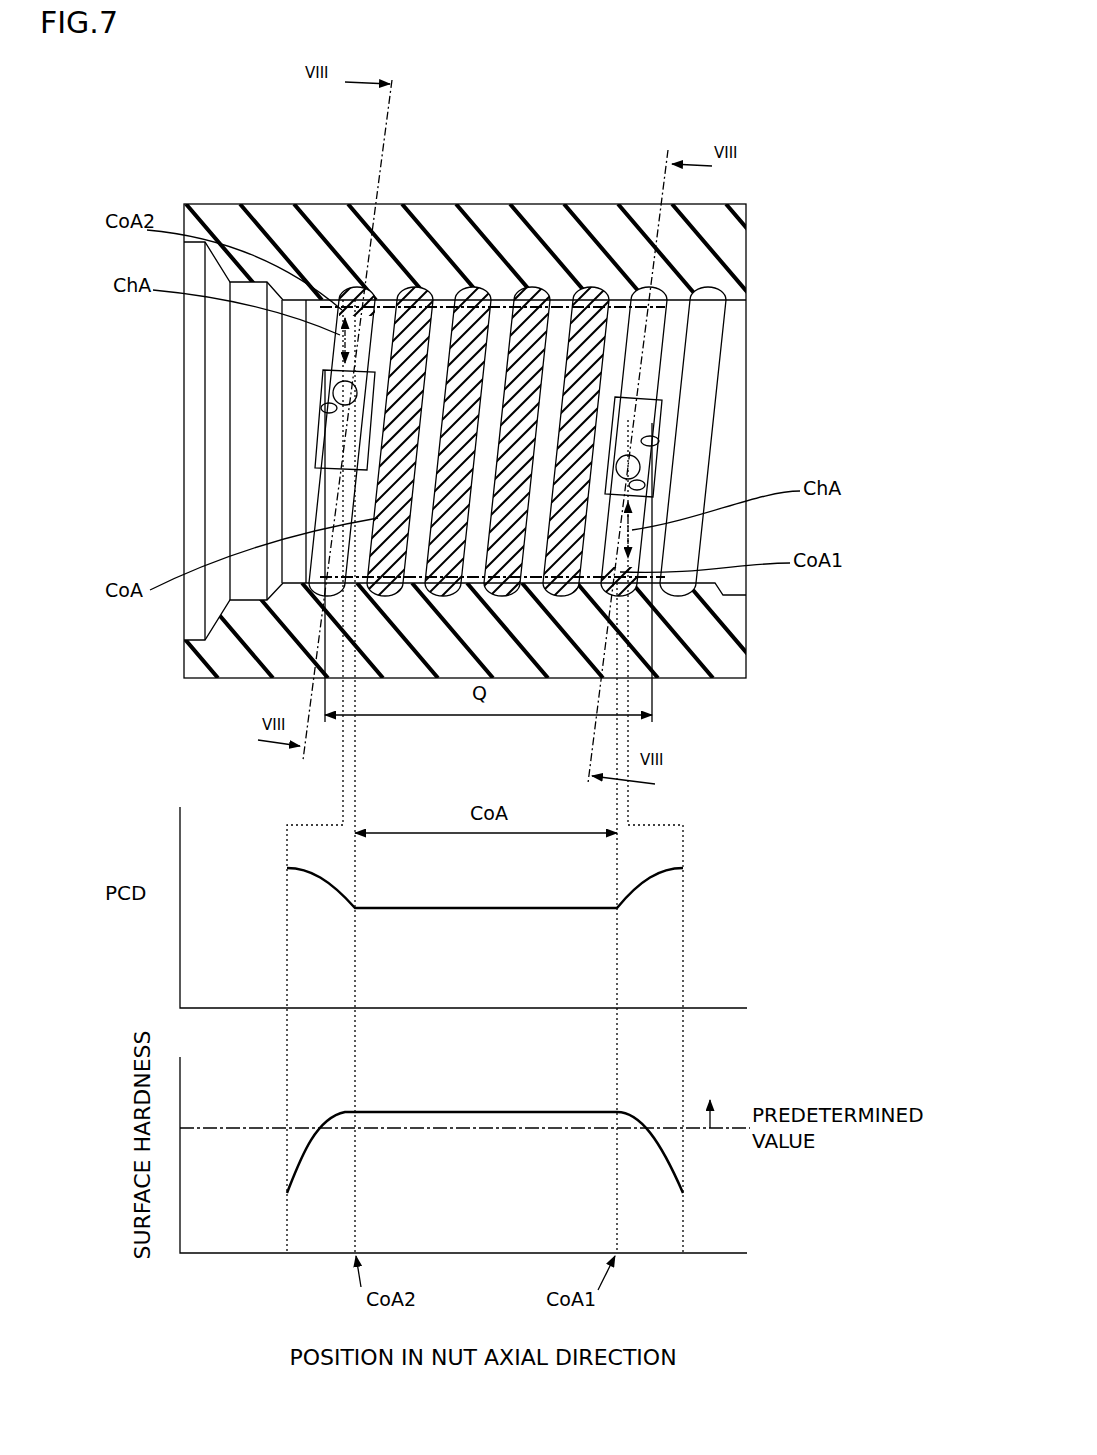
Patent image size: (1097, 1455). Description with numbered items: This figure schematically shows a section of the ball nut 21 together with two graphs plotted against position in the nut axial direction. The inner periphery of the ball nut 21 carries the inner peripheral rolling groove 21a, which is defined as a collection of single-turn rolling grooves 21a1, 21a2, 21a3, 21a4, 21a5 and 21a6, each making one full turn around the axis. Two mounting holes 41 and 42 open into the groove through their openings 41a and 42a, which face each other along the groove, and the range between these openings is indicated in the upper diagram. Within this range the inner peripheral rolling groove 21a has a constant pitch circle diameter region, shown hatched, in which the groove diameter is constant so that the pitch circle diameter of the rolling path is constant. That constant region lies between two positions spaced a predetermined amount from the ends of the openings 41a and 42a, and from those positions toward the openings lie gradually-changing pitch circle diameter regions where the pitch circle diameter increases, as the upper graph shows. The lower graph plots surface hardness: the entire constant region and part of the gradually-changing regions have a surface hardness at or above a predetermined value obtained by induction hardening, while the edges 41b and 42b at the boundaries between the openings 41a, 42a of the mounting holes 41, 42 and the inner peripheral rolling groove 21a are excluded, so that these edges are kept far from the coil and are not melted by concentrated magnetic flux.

The ball nut 21 is at (762, 232).
The inner peripheral rolling groove 21a is at (712, 358).
The single-turn rolling groove 21a1 is at (343, 303).
The single-turn rolling groove 21a2 is at (392, 298).
The single-turn rolling groove 21a3 is at (465, 296).
The single-turn rolling groove 21a4 is at (500, 296).
The single-turn rolling groove 21a5 is at (575, 296).
The single-turn rolling groove 21a6 is at (625, 296).
The mounting hole 41 is at (747, 447).
The opening 41a is at (650, 445).
The edge 41b is at (650, 472).
The mounting hole 42 is at (231, 420).
The opening 42a is at (323, 398).
The edge 42b is at (323, 382).